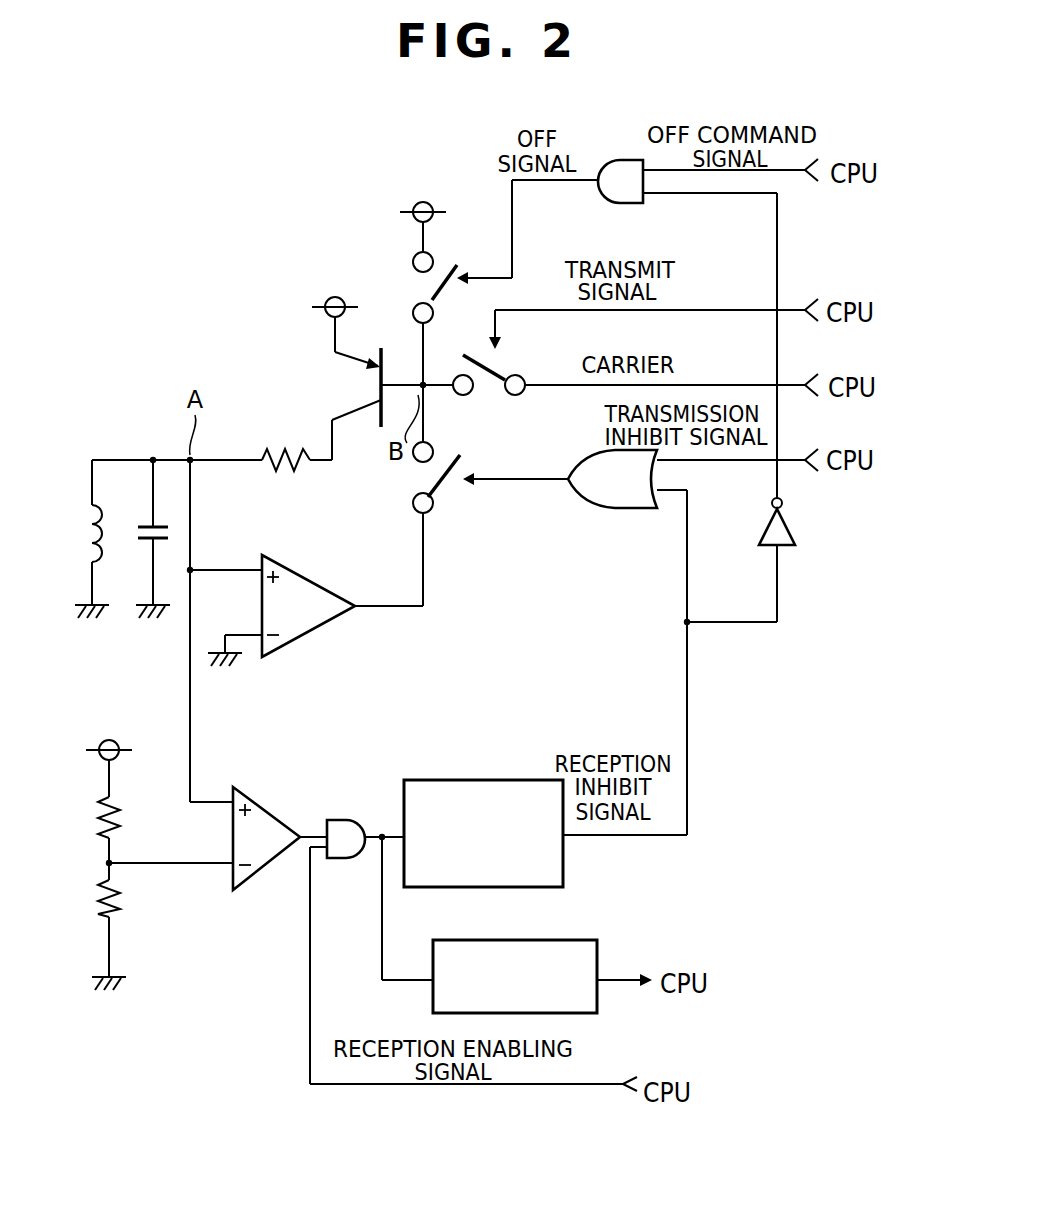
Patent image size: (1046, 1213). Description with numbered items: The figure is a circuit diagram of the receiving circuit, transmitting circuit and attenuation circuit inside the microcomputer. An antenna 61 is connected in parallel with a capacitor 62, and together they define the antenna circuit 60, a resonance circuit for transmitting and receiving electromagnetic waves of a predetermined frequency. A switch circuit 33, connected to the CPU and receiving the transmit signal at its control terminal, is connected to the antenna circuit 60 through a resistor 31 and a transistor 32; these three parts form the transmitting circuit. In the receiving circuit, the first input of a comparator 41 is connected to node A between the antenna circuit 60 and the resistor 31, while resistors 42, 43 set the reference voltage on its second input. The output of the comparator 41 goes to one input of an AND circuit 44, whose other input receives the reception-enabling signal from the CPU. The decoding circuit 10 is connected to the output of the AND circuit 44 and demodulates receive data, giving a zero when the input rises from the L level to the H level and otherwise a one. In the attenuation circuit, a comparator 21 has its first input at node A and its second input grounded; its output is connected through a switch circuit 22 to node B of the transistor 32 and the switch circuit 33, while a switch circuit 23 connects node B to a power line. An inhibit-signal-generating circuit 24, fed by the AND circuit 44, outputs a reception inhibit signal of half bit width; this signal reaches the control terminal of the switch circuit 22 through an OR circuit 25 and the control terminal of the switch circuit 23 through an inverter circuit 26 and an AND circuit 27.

The decoding circuit 10 is at (525, 938).
The comparator 21 is at (317, 627).
The switch circuit 22 is at (447, 492).
The switch circuit 23 is at (438, 273).
The inhibit-signal-generating circuit 24 is at (493, 778).
The OR circuit 25 is at (622, 510).
The inverter circuit 26 is at (760, 533).
The AND circuit 27 is at (623, 160).
The resistor 31 is at (287, 452).
The transistor 32 is at (376, 348).
The switch circuit 33 is at (483, 388).
The comparator 41 is at (247, 792).
The resistor 42 is at (118, 908).
The resistor 43 is at (118, 825).
The AND circuit 44 is at (352, 820).
The antenna circuit 60 is at (132, 457).
The antenna 61 is at (80, 517).
The capacitor 62 is at (132, 540).